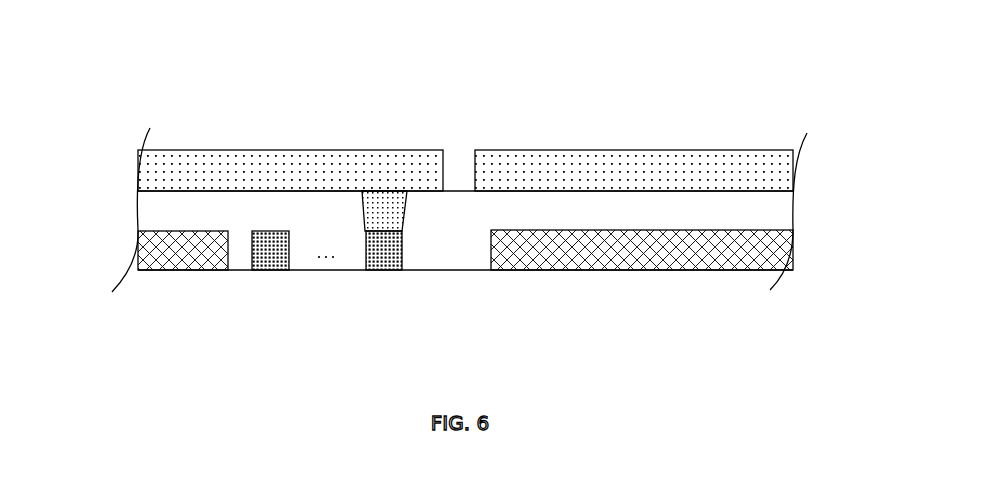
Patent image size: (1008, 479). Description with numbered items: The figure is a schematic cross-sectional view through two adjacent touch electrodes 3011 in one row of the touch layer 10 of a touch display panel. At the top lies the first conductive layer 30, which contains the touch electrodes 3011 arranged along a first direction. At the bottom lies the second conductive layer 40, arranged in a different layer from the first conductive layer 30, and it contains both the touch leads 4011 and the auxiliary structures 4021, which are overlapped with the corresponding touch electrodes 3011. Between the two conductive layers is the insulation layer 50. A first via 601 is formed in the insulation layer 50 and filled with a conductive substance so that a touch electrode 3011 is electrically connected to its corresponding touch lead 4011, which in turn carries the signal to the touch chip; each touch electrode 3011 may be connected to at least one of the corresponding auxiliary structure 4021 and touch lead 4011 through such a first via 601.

The touch layer 10 is at (118, 98).
The first conductive layer 30 is at (465, 122).
The touch electrode 3011 is at (518, 103).
The first via 601 is at (358, 204).
The insulation layer 50 is at (777, 222).
The second conductive layer 40 is at (465, 304).
The auxiliary structure 4021 is at (188, 264).
The touch lead 4011 is at (277, 264).